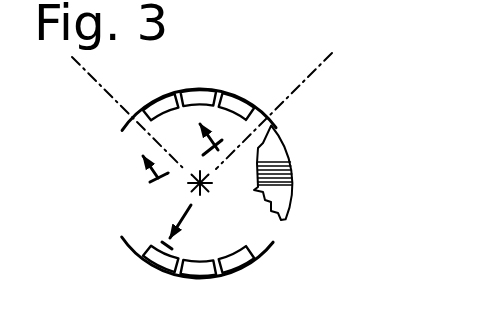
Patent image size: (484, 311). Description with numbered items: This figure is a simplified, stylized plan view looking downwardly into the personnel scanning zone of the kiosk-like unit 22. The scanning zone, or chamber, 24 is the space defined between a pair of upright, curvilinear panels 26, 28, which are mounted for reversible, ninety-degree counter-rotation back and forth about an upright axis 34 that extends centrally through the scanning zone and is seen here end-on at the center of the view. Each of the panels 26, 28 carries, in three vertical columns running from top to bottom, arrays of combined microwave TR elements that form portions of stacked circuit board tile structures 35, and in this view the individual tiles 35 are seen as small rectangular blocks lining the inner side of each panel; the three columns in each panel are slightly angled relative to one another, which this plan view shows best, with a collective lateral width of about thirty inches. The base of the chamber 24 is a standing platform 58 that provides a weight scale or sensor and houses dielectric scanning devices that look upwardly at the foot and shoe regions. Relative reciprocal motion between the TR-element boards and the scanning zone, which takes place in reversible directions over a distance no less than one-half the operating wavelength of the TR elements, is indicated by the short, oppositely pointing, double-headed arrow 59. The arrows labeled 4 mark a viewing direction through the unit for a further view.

The kiosk-like unit 22 is at (160, 175).
The personnel scanning zone 24 is at (143, 203).
The curvilinear panel 26 is at (133, 117).
The curvilinear panel 28 is at (122, 246).
The upright axis 34 is at (203, 188).
The circuit board tile structure 35 is at (240, 102).
The standing platform 58 is at (280, 195).
The double-headed arrow 59 is at (184, 218).
The section line 4- 4 is at (177, 184).